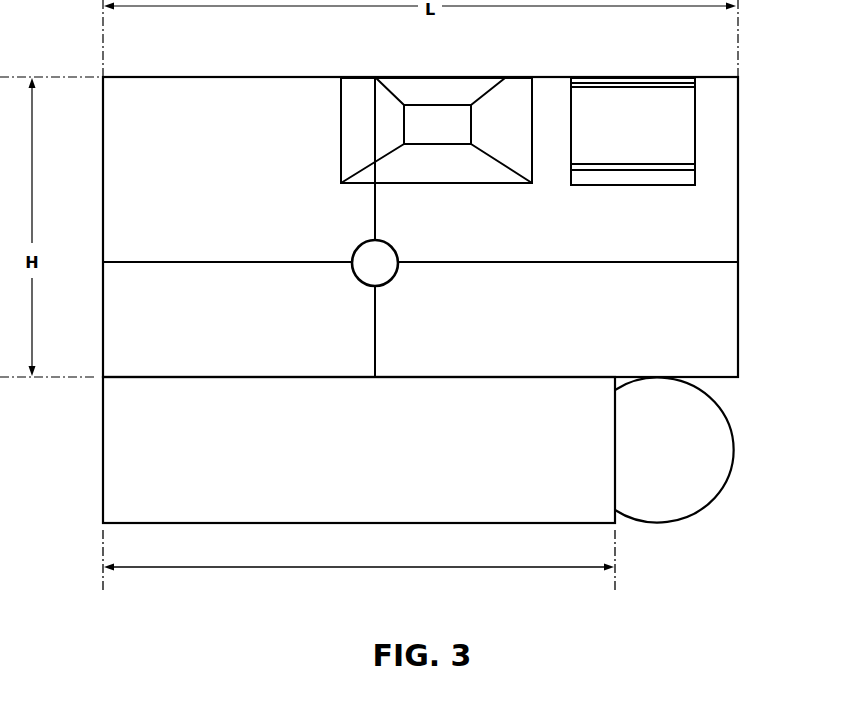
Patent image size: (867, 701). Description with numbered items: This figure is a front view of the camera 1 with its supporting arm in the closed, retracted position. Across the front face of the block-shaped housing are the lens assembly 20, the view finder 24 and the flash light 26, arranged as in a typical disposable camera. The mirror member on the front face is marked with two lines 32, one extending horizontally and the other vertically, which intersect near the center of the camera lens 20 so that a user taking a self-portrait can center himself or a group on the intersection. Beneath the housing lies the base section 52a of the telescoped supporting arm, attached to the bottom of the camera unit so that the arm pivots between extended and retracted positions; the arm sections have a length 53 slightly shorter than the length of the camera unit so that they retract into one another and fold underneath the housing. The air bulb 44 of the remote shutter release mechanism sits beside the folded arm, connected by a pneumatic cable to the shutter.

The camera 1 is at (777, 240).
The lens assembly 20 is at (363, 258).
The view finder 24 is at (443, 167).
The flash light 26 is at (646, 130).
The lines 32 is at (142, 258).
The base section 52a is at (354, 459).
The air bulb 44 is at (650, 459).
The length 53 is at (490, 568).